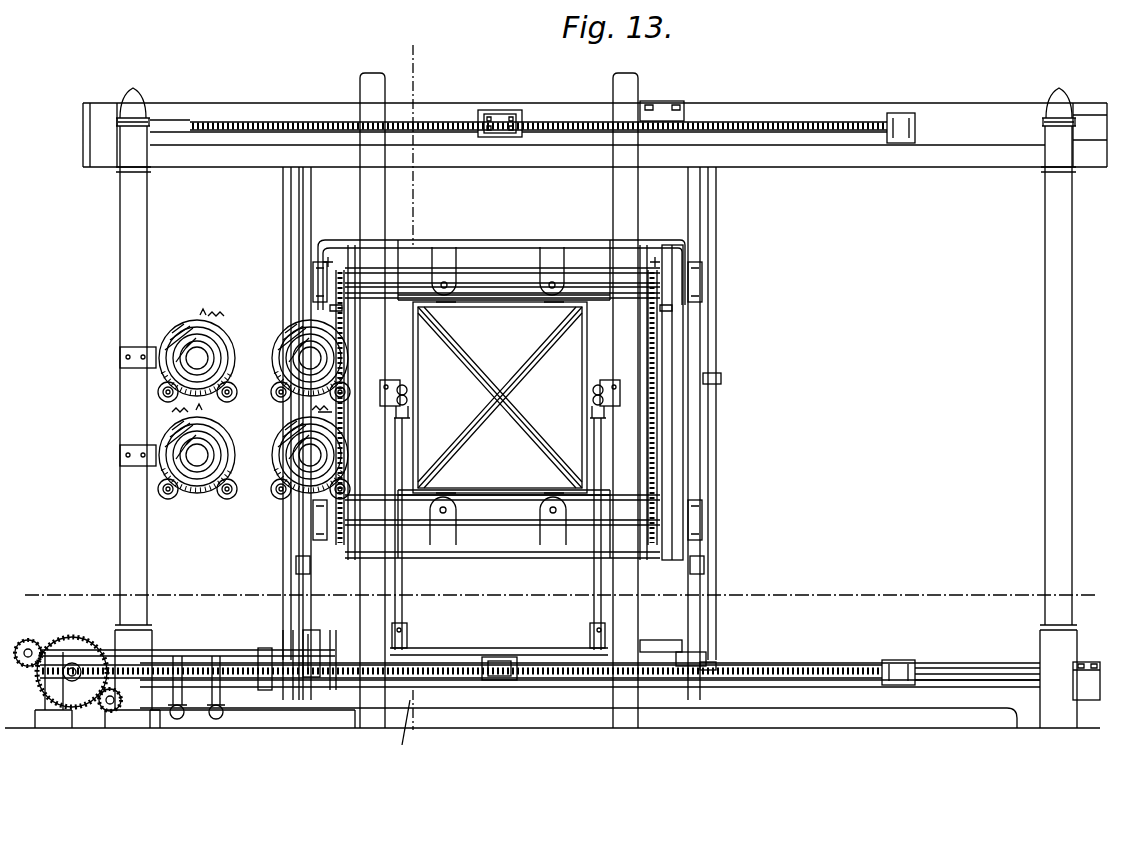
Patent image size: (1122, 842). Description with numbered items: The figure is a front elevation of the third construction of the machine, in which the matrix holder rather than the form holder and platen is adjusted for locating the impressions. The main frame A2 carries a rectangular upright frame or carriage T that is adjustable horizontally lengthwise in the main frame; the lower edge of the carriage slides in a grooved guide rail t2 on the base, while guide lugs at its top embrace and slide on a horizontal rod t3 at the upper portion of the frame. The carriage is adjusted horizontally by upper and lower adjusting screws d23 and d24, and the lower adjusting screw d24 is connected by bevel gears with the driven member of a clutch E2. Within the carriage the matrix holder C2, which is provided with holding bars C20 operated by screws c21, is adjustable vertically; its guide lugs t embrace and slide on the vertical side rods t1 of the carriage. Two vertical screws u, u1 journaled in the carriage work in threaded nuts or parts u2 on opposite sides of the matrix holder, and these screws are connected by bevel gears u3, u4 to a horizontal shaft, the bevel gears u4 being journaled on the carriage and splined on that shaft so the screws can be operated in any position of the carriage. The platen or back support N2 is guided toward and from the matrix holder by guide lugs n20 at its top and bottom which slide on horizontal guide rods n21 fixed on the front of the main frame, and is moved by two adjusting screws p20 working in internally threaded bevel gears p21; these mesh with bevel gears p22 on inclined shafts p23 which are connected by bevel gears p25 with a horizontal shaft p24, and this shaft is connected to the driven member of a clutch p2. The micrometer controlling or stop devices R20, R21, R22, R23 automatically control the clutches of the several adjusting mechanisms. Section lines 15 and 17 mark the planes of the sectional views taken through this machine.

The section line 15— 15 is at (405, 405).
The section line 17— 17 is at (564, 592).
The horizontal rod t3 is at (767, 118).
The upper adjusting screw d23 is at (849, 118).
The vertical side rods t1 is at (692, 205).
The guide lugs t is at (690, 518).
The micrometer controlling or stop device R21 is at (190, 333).
The micrometer controlling or stop device R20 is at (294, 337).
The micrometer controlling or stop device R22 is at (293, 440).
The micrometer controlling or stop device R23 is at (197, 496).
The platen or back support N2 is at (569, 378).
The holding bars C20 is at (490, 504).
The horizontal guide rods n21 is at (552, 513).
The guide lugs n20 is at (548, 497).
The internally threaded bevel gears p21 is at (596, 392).
The adjusting screws p20 is at (596, 399).
The bevel gears p22 is at (596, 410).
The inclined shafts p23 is at (597, 571).
The screws c21 is at (652, 337).
The matrix holder C2 is at (684, 449).
The threaded nuts or parts u2 is at (714, 379).
The vertical screw u1 is at (704, 565).
The vertical screw u is at (296, 565).
The main frame A2 is at (1047, 524).
The clutch E2 is at (76, 648).
The bevel gears u3 is at (726, 668).
The clutch p2 is at (313, 668).
The horizontal shaft p24 is at (476, 650).
The bevel gears p25 is at (600, 650).
The rectangular upright frame or carriage T is at (643, 646).
The bevel gears u4 is at (706, 668).
The lower adjusting screw d24 is at (818, 656).
The grooved guide rail t2 is at (930, 675).